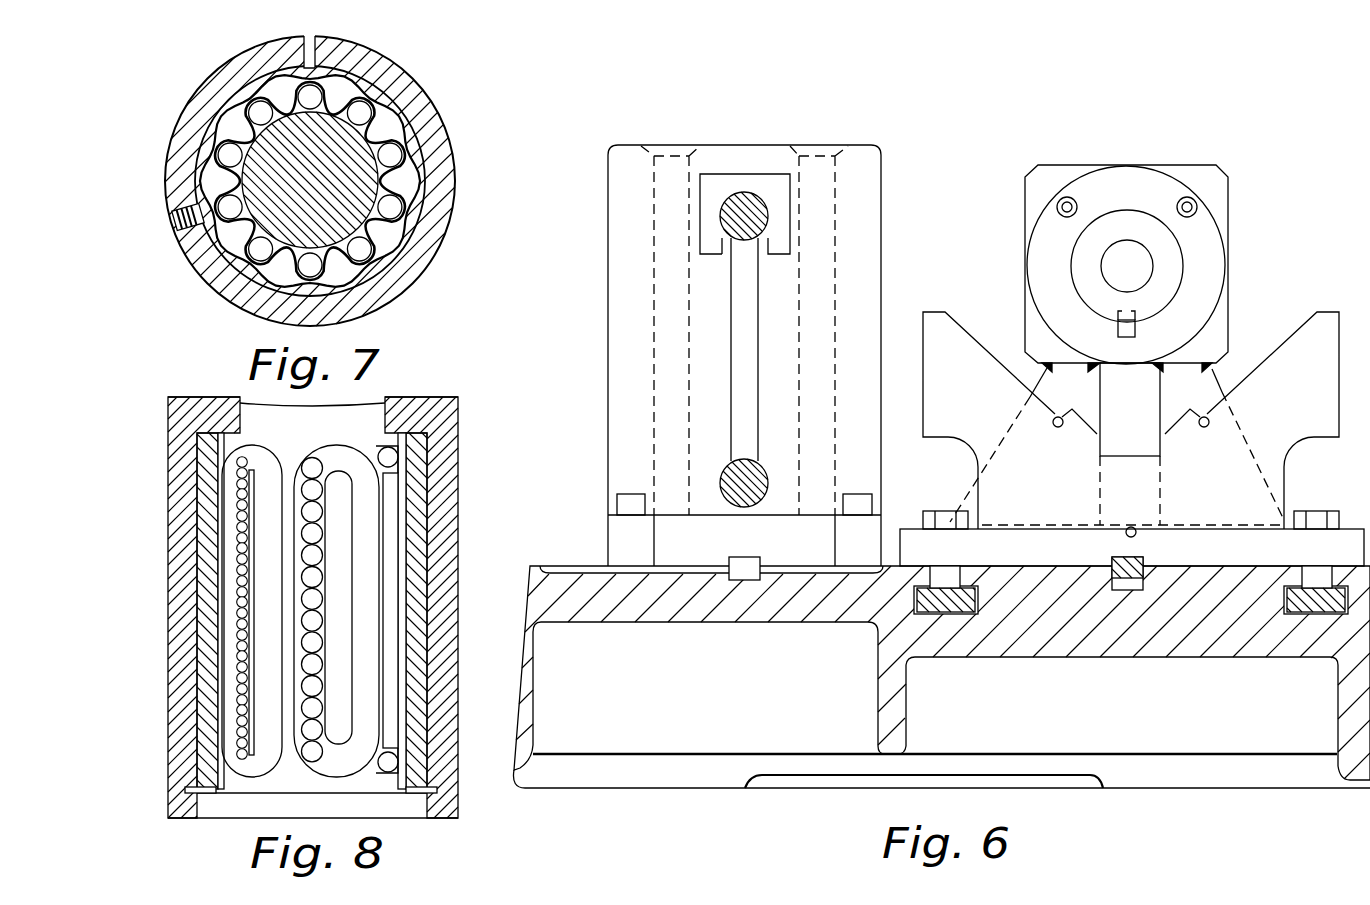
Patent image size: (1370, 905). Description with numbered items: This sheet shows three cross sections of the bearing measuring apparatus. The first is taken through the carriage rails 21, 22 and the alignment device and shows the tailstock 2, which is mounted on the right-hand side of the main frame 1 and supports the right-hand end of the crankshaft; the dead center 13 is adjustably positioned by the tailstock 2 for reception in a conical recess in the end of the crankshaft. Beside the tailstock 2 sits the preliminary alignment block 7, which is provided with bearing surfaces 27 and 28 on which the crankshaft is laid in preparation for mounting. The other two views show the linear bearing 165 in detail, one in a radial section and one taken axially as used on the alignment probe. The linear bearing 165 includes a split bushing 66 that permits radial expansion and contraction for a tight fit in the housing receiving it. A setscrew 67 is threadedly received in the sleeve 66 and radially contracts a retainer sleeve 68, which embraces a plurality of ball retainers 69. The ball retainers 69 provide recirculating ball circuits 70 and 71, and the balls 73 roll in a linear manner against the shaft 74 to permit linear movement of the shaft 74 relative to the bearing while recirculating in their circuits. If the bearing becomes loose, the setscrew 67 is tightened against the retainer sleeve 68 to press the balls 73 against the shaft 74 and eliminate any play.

In FIG. 6, the main frame 1 is at (533, 606).
In FIG. 6, the tailstock 2 is at (1240, 201).
In FIG. 6, the preliminary alignment block 7 is at (1337, 402).
In FIG. 6, the dead center 13 is at (1108, 281).
In FIG. 6, the upper rail 21 is at (746, 240).
In FIG. 6, the rail 22 is at (731, 465).
In FIG. 6, the bearing surface 27 is at (976, 345).
In FIG. 6, the bearing surface 28 is at (1281, 345).
In FIG. 7, the split bushing 66 is at (413, 92).
In FIG. 8, the split bushing 66 is at (168, 488).
In FIG. 7, the setscrew 67 is at (176, 221).
In FIG. 7, the retainer sleeve 68 is at (383, 260).
In FIG. 8, the retainer sleeve 68 is at (199, 599).
In FIG. 7, the ball retainers 69 is at (402, 176).
In FIG. 8, the recirculating ball circuit 70 is at (356, 457).
In FIG. 8, the recirculating ball circuit 71 is at (247, 452).
In FIG. 7, the balls 73 is at (308, 106).
In FIG. 8, the balls 73 is at (245, 472).
In FIG. 7, the shaft 74 is at (253, 183).
In FIG. 7, the linear bearing 165 is at (456, 136).
In FIG. 8, the linear bearing 165 is at (464, 450).